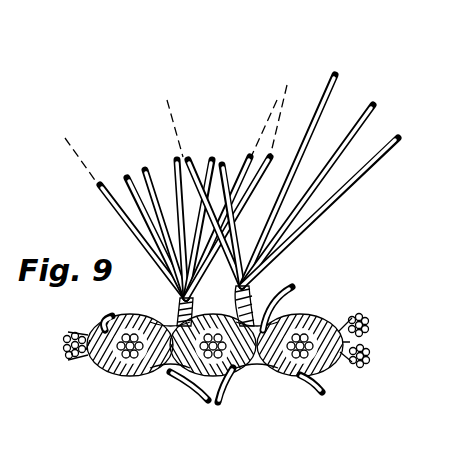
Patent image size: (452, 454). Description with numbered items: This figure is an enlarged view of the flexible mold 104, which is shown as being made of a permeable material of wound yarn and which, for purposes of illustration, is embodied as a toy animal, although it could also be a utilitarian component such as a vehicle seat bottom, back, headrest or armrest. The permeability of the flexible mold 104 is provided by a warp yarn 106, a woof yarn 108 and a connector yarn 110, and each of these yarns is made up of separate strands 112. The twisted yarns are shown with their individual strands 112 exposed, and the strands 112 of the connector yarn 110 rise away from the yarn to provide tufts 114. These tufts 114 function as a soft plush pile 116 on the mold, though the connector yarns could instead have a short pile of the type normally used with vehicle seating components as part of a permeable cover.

The flexible mold 104 is at (378, 320).
The warp yarn 106 is at (135, 377).
The woof yarn 108 is at (250, 388).
The connector yarn 110 is at (173, 323).
The strands 112 is at (150, 203).
The tufts 114 is at (178, 238).
The soft plush pile 116 is at (350, 213).